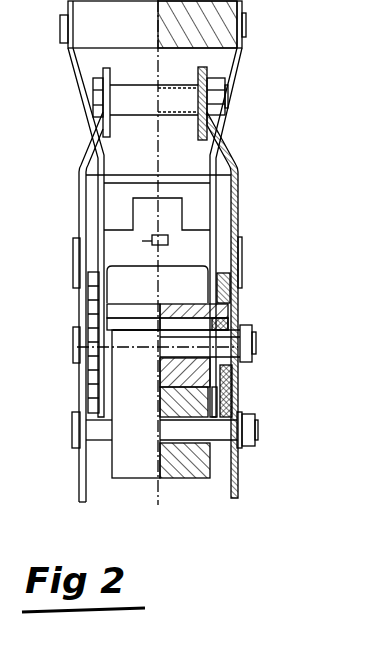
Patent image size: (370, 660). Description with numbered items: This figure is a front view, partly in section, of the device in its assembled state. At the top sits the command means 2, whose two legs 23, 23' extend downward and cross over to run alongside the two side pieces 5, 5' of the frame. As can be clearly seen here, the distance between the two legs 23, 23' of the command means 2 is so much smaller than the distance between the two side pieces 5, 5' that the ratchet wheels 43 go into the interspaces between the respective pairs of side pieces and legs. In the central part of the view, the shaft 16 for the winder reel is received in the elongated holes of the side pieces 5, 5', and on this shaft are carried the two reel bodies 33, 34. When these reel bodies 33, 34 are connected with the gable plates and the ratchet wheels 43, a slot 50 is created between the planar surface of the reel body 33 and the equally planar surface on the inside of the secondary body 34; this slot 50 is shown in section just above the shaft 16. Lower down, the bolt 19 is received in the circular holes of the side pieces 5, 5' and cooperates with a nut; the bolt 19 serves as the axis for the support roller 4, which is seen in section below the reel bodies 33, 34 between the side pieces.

The command means 2 is at (245, 68).
The leg of the command means 23 is at (70, 307).
The leg of the command means 23' is at (254, 305).
The side piece 5 is at (61, 300).
The side piece 5' is at (266, 260).
The slot 50 is at (120, 327).
The secondary body 34 is at (196, 312).
The shaft 16 is at (230, 345).
The ratchet wheel 43 is at (92, 385).
The reel body 33 is at (138, 372).
The bolt 19 is at (217, 432).
The support roller 4 is at (138, 472).